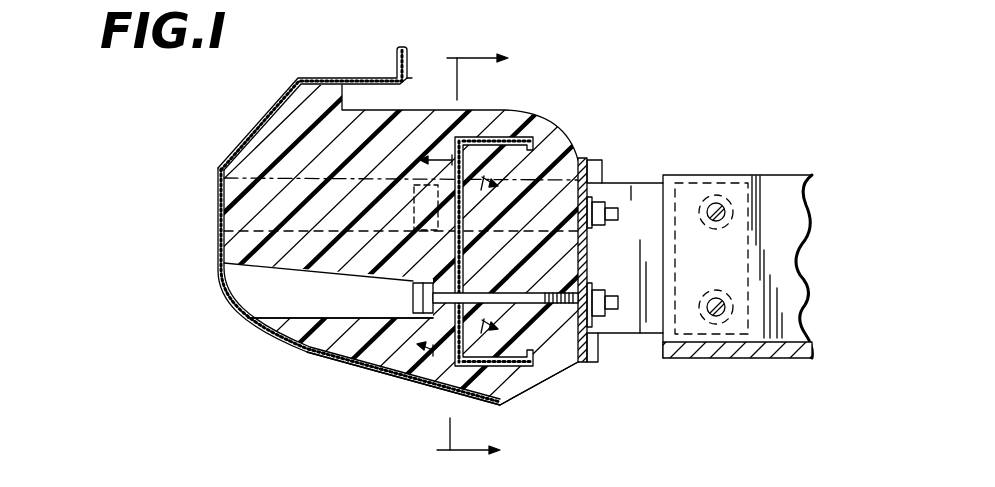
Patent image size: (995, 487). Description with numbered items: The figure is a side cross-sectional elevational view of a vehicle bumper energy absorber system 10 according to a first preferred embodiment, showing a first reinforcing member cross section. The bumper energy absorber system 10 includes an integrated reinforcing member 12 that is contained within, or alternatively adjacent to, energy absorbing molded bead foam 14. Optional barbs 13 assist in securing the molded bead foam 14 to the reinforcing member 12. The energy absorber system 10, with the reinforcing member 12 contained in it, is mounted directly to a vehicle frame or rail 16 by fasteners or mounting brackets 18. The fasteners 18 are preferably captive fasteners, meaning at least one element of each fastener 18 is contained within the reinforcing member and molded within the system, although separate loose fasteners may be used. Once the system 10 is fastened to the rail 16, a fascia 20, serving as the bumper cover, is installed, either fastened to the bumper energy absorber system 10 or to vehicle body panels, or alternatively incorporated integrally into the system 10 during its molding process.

The vehicle bumper energy absorber system 10 is at (445, 247).
The integrated reinforcing member 12 is at (528, 138).
The barbs 13 is at (425, 345).
The energy absorbing molded bead foam 14 is at (318, 340).
The vehicle frame or rail 16 is at (758, 358).
The fasteners or mounting brackets 18 is at (538, 303).
The fascia 20 is at (224, 293).